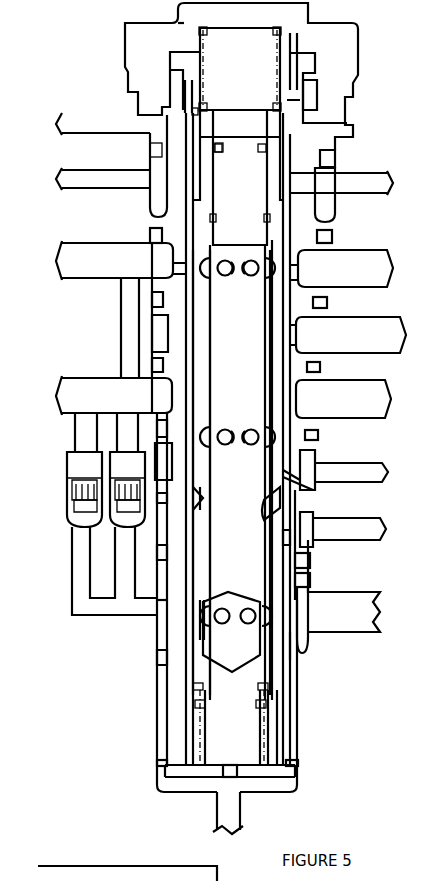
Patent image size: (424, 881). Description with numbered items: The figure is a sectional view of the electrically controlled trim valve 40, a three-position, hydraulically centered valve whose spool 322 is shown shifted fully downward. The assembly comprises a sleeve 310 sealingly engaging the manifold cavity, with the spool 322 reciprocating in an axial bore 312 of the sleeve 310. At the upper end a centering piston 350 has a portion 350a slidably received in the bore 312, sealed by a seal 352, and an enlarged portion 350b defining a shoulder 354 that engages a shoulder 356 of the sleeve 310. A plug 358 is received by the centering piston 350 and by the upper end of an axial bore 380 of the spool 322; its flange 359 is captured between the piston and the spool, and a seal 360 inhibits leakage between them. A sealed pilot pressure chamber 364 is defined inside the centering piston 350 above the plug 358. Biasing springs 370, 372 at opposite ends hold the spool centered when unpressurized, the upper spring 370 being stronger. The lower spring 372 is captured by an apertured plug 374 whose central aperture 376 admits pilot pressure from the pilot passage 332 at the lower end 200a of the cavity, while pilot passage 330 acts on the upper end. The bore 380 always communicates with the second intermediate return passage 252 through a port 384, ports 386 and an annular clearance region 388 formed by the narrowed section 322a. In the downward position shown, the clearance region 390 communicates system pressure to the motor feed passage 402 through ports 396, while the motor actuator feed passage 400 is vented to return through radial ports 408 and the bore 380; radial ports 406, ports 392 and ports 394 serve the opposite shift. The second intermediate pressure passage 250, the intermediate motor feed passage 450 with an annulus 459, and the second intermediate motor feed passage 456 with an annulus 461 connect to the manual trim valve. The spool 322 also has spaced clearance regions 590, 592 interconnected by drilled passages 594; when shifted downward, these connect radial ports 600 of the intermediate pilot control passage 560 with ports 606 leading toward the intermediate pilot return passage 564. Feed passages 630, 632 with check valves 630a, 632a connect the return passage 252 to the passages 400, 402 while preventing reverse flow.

The electrically controlled trim valve 40 is at (363, 22).
The biasing spring 370 is at (180, 22).
The sealed pilot pressure chamber 364 is at (258, 56).
The shoulder 356 is at (196, 112).
The centering piston 350 is at (245, 124).
The portion of centering piston 350a is at (200, 144).
The enlarged portion of centering piston 350b is at (290, 97).
The shoulder 354 is at (317, 118).
The seal 360 is at (345, 137).
The pilot pressure passage 330 is at (116, 112).
The seal 352 is at (336, 164).
The plug 358 is at (256, 192).
The flange 359 is at (325, 205).
The annulus 459 is at (332, 237).
The motor actuator feed passage 400 is at (104, 273).
The ports 394 is at (172, 272).
The intermediate motor feed passage 450 is at (370, 282).
The radial ports 408 is at (237, 283).
The ports 392 is at (327, 304).
The axial bore 380 is at (214, 352).
The second intermediate pressure passage 250 is at (390, 339).
The sleeve 310 is at (294, 342).
The axial bore 312 is at (282, 355).
The annular clearance region 390 is at (195, 370).
The annulus 461 is at (330, 377).
The motor feed passage 402 is at (100, 404).
The ports 396 is at (172, 401).
The second intermediate motor feed passage 456 is at (368, 416).
The spool 322 is at (318, 433).
The radial ports 406 is at (258, 448).
The intermediate pilot control passage 560 is at (331, 474).
The radial ports 600 is at (313, 488).
The annular clearance region 590 is at (302, 516).
The check valve 630a is at (85, 516).
The drilled passages 594 is at (252, 508).
The check valve 632a is at (128, 524).
The ports 606 is at (290, 536).
The intermediate pilot return passage 564 is at (368, 528).
The feed passage 630 is at (82, 578).
The annular clearance region 388 is at (208, 600).
The annular clearance region 592 is at (310, 583).
The feed passage 632 is at (125, 596).
The ports 386 is at (236, 632).
The second intermediate return passage 252 is at (350, 622).
The port 384 is at (302, 640).
The narrowed section of spool 322a is at (254, 708).
The biasing spring 372 is at (157, 763).
The apertured plug 374 is at (290, 773).
The central aperture 376 is at (228, 780).
The lower end of manifold cavity 200a is at (305, 787).
The pilot pressure passage 332 is at (238, 826).